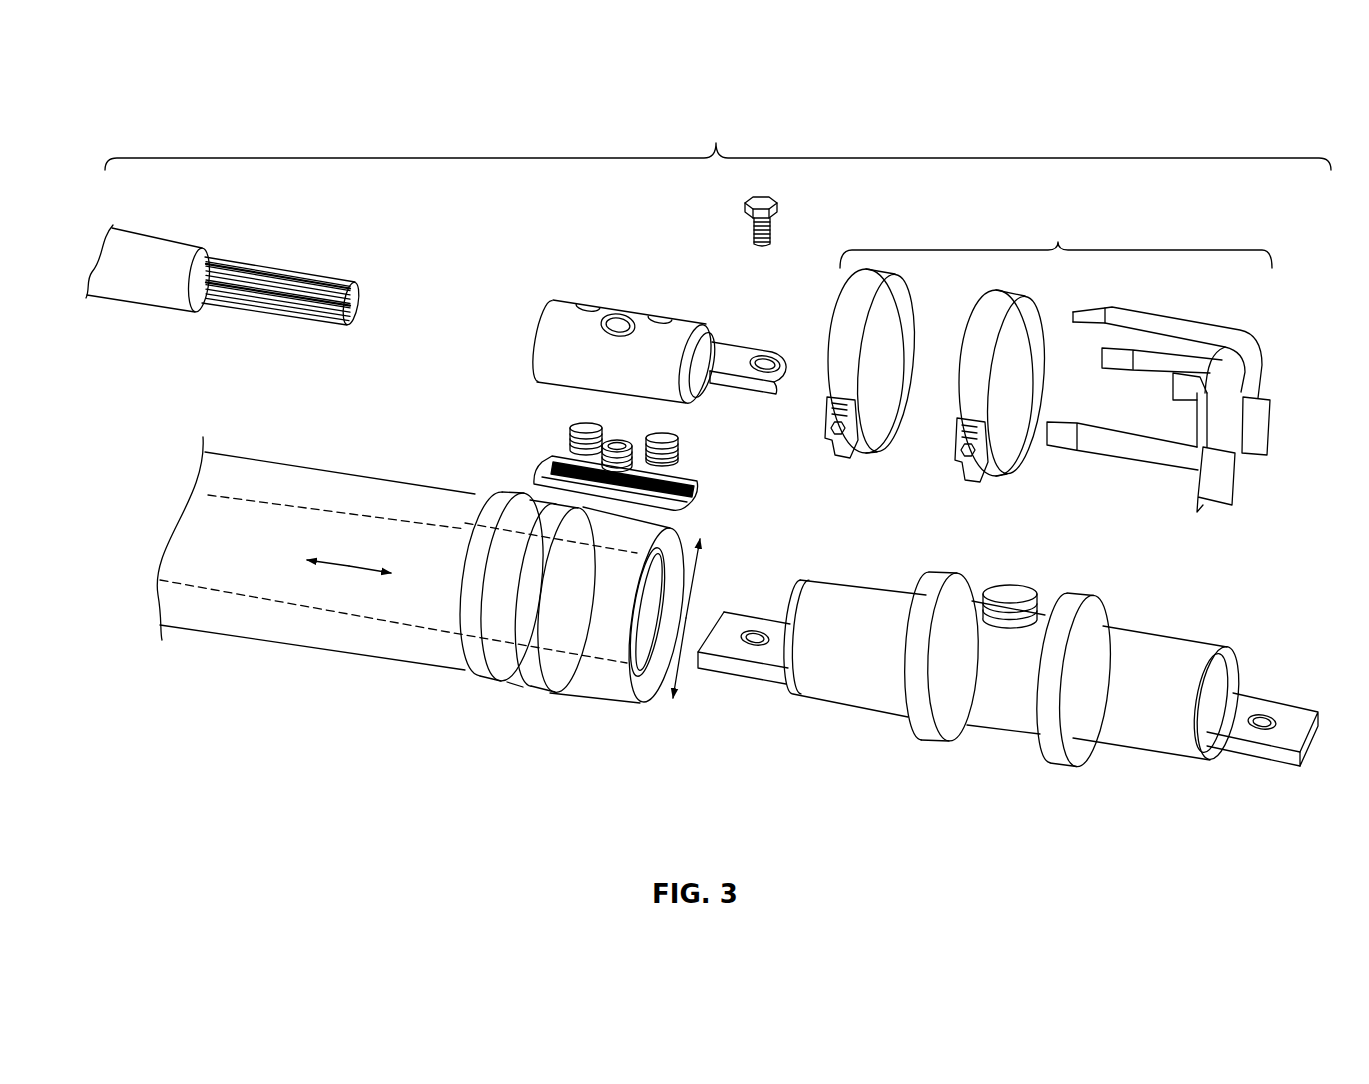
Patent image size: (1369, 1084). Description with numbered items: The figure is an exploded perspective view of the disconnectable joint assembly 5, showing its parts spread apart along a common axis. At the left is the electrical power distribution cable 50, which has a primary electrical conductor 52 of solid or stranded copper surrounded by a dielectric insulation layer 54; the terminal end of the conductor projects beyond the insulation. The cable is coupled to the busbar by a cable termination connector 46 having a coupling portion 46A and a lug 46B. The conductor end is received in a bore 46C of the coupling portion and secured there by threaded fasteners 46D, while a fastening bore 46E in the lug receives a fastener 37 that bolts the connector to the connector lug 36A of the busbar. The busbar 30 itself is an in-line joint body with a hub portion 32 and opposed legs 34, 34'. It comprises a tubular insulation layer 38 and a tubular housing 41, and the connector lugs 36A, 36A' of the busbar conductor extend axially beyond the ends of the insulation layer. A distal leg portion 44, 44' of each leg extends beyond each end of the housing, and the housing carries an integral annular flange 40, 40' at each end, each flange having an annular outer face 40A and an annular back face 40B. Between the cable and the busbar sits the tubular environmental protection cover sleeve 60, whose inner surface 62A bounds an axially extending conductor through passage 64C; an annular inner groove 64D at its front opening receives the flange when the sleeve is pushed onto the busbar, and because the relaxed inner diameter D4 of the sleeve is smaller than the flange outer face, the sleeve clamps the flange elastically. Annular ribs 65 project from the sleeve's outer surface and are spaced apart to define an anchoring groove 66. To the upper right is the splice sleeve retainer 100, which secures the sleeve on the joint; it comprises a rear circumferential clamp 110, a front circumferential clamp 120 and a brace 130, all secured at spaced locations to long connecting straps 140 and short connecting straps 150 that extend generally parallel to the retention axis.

The disconnectable joint assembly 5 is at (718, 127).
The electrical power distribution cable 50 is at (224, 268).
The primary electrical conductor 52 is at (307, 270).
The insulation layer 54 is at (143, 296).
The fastener 37 is at (752, 234).
The cable termination connector 46 is at (620, 350).
The coupling portion 46A is at (577, 368).
The lug 46B is at (757, 334).
The bore 46C is at (529, 319).
The threaded fasteners 46D is at (621, 443).
The fastening bore 46E is at (763, 361).
The annular inner groove 64D is at (689, 517).
The inner surface 62A is at (341, 520).
The conductor through passage 64C is at (425, 571).
The environmental protection cover sleeve 60 is at (461, 614).
The ribs 65 is at (473, 678).
The anchoring groove 66 is at (503, 691).
The relaxed inner diameter D4 is at (698, 573).
The connector lug 36A is at (742, 677).
The distal leg portion 44 is at (853, 676).
The leg 34 is at (853, 683).
The annular outer face 40A is at (922, 734).
The flange 40 is at (933, 666).
The annular back face 40B is at (941, 643).
The housing 41 is at (988, 716).
The hub portion 32 is at (993, 682).
The busbar 30 is at (1006, 694).
The flange 40' is at (1073, 654).
The insulation layer 38 is at (1159, 728).
The distal leg portion 44' is at (1159, 725).
The leg 34' is at (1159, 746).
The connector lug 36A' is at (1262, 758).
The rear circumferential clamp 110 is at (883, 267).
The front circumferential clamp 120 is at (1013, 287).
The splice sleeve retainer 100 is at (1077, 356).
The brace 130 is at (1188, 412).
The short connecting straps 150 is at (1176, 383).
The long connecting straps 140 is at (1125, 451).